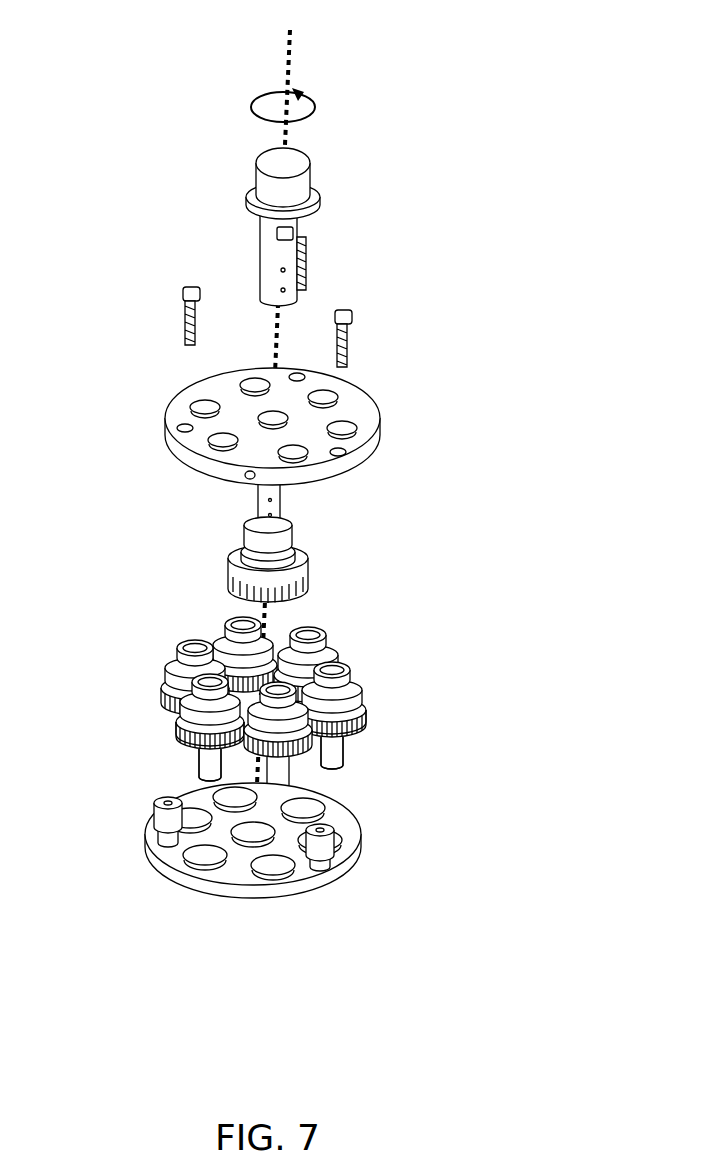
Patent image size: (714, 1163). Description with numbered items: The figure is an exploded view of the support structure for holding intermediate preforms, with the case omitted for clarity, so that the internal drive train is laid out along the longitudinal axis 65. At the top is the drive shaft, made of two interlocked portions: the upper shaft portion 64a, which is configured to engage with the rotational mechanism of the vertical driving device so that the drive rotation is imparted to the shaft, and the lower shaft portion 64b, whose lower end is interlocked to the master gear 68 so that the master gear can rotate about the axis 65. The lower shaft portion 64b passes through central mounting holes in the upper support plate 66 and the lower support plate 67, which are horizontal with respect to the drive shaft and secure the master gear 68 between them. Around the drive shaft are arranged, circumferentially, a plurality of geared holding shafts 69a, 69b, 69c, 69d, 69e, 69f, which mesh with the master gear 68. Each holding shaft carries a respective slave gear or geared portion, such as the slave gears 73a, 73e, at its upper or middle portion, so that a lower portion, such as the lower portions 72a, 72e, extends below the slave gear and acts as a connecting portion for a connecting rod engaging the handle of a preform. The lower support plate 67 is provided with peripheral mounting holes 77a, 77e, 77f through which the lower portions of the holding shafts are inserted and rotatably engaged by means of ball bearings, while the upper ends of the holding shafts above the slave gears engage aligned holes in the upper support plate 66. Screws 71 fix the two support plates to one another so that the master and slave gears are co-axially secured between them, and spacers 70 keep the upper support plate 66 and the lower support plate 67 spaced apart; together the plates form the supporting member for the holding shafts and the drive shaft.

The longitudinal axis 65 is at (288, 53).
The upper shaft portion 64a is at (303, 195).
The screws 71 is at (305, 255).
The upper support plate 66 is at (363, 408).
The lower shaft portion 64b is at (267, 515).
The master gear 68 is at (307, 570).
The geared holding shaft 69a is at (364, 715).
The geared holding shaft 69b is at (331, 627).
The geared holding shaft 69c is at (224, 622).
The geared holding shaft 69d is at (170, 648).
The geared holding shaft 69e is at (177, 713).
The geared holding shaft 69f is at (300, 753).
The slave gear 73a is at (362, 707).
The slave gear 73e is at (180, 727).
The lower portion of holding shaft 72a is at (338, 740).
The lower portion of holding shaft 72e is at (212, 762).
The spacers 70 is at (163, 825).
The lower support plate 67 is at (175, 868).
The peripheral mounting hole 77a is at (343, 848).
The peripheral mounting hole 77e is at (200, 862).
The peripheral mounting hole 77f is at (265, 868).